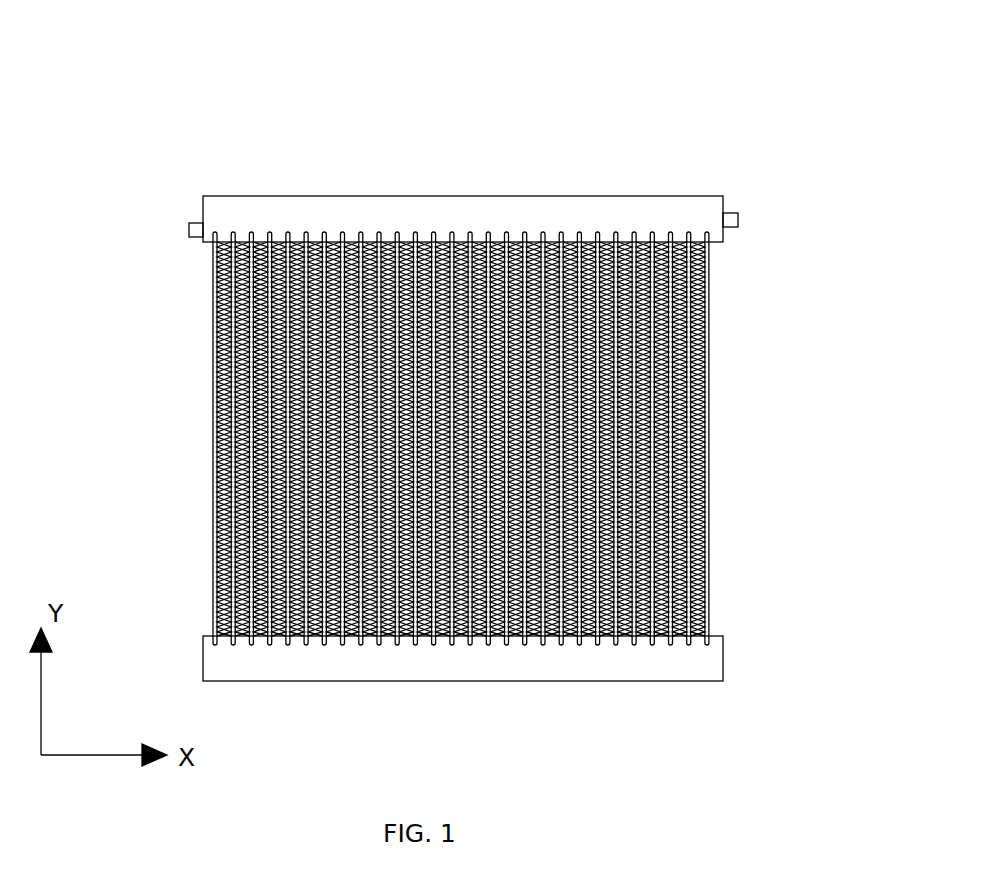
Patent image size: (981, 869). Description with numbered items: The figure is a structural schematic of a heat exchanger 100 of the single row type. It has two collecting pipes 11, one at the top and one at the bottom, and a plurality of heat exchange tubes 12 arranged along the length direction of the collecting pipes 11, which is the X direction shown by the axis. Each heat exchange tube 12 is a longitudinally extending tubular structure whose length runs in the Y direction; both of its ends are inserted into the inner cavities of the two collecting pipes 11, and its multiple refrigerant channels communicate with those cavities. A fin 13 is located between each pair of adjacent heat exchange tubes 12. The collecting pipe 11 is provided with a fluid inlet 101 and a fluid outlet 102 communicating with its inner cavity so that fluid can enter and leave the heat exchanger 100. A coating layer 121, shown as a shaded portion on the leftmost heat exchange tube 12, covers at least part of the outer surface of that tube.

The heat exchanger 100 is at (458, 375).
The collecting pipe 11 is at (700, 217).
The fluid inlet 101 is at (730, 217).
The fluid outlet 102 is at (199, 230).
The heat exchange tube 12 is at (448, 438).
The coating layer 121 is at (212, 430).
The fin 13 is at (705, 408).